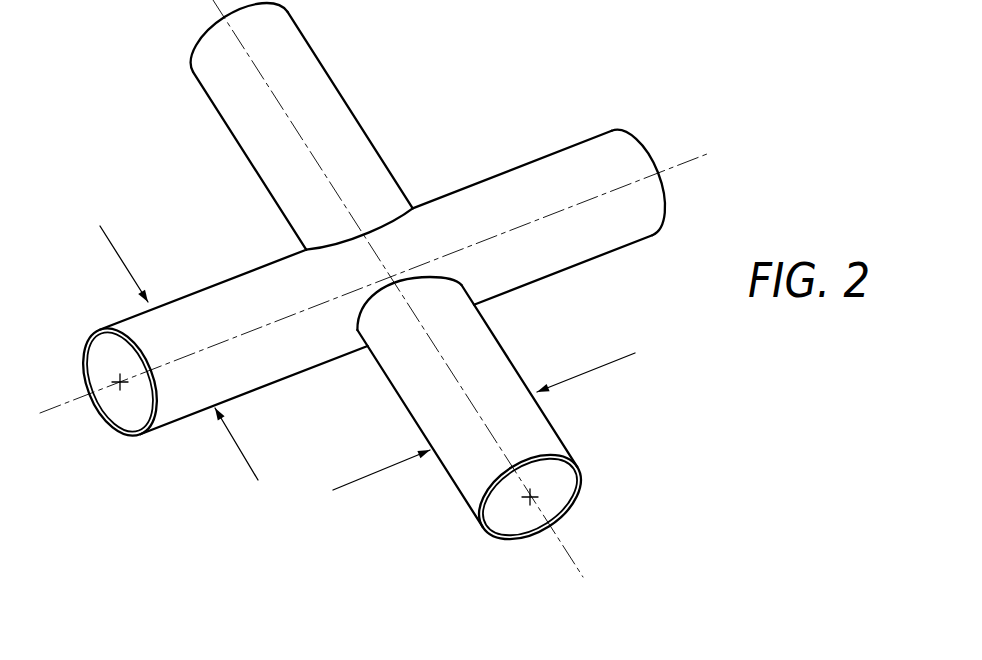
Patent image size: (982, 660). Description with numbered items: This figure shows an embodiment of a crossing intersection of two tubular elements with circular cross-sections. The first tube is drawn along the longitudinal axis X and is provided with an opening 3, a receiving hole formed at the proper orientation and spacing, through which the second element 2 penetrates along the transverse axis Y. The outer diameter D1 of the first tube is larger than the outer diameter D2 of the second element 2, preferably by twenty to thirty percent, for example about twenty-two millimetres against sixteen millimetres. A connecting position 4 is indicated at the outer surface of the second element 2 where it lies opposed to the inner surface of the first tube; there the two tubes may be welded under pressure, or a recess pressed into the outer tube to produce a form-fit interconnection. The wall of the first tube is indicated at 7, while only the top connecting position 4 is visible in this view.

The second element 2 is at (467, 475).
The opening 3 is at (450, 277).
The connecting position 4 is at (430, 232).
The tube wall 7 is at (170, 408).
The outer diameter of first element D1 is at (170, 334).
The outer diameter of second element D2 is at (502, 414).
The axis of main tube X is at (361, 292).
The axis of transverse tube Y is at (412, 301).